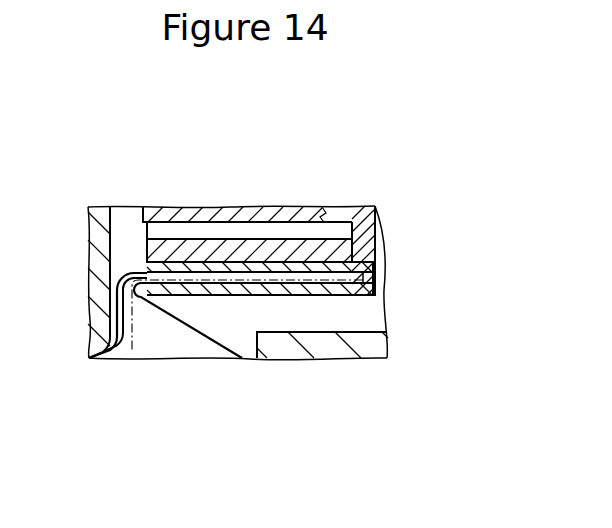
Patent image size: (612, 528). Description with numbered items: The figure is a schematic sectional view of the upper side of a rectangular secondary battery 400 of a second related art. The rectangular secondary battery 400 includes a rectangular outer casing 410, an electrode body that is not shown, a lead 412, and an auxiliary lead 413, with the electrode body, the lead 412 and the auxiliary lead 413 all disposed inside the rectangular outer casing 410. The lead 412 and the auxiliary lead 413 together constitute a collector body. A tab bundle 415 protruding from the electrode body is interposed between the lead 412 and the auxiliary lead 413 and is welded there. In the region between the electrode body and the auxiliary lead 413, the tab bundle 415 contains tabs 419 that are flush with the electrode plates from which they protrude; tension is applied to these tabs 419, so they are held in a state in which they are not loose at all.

The rectangular secondary battery 400 is at (324, 167).
The rectangular outer casing 410 is at (94, 262).
The lead 412 is at (280, 250).
The auxiliary lead 413 is at (326, 296).
The tab bundle 415 is at (168, 348).
The tabs 419 is at (126, 347).